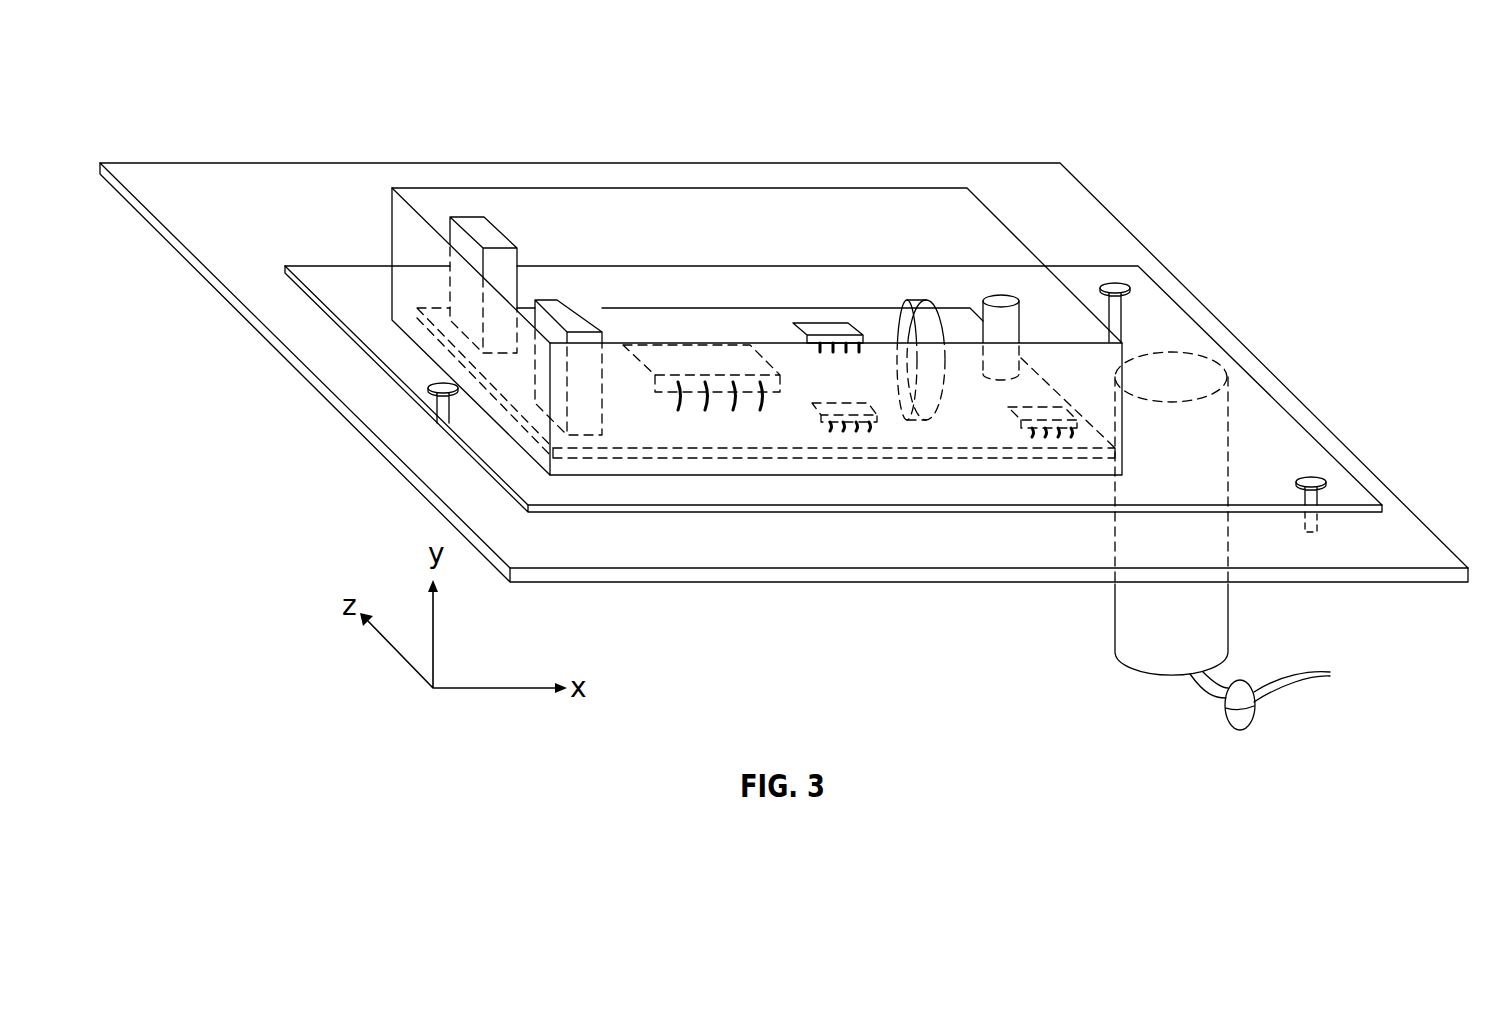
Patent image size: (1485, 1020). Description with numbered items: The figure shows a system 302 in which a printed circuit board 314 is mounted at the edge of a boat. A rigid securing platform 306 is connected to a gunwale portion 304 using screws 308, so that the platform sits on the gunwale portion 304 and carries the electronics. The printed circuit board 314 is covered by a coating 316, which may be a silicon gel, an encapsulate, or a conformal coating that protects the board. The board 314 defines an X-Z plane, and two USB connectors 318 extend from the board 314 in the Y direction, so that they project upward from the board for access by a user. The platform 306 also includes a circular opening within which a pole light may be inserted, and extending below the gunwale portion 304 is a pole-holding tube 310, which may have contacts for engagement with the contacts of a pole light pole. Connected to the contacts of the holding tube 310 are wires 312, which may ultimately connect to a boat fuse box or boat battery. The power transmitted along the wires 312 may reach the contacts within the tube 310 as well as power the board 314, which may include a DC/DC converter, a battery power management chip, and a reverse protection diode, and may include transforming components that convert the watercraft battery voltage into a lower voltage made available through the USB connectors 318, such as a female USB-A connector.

The system 302 is at (311, 108).
The gunwale portion 304 is at (244, 205).
The rigid securing platform 306 is at (1286, 446).
The screws 308 is at (1130, 287).
The pole-holding tube 310 is at (1148, 652).
The wires 312 is at (1237, 730).
The printed circuit board 314 is at (672, 434).
The coating 316 is at (1010, 229).
The USB connectors 318 is at (462, 272).